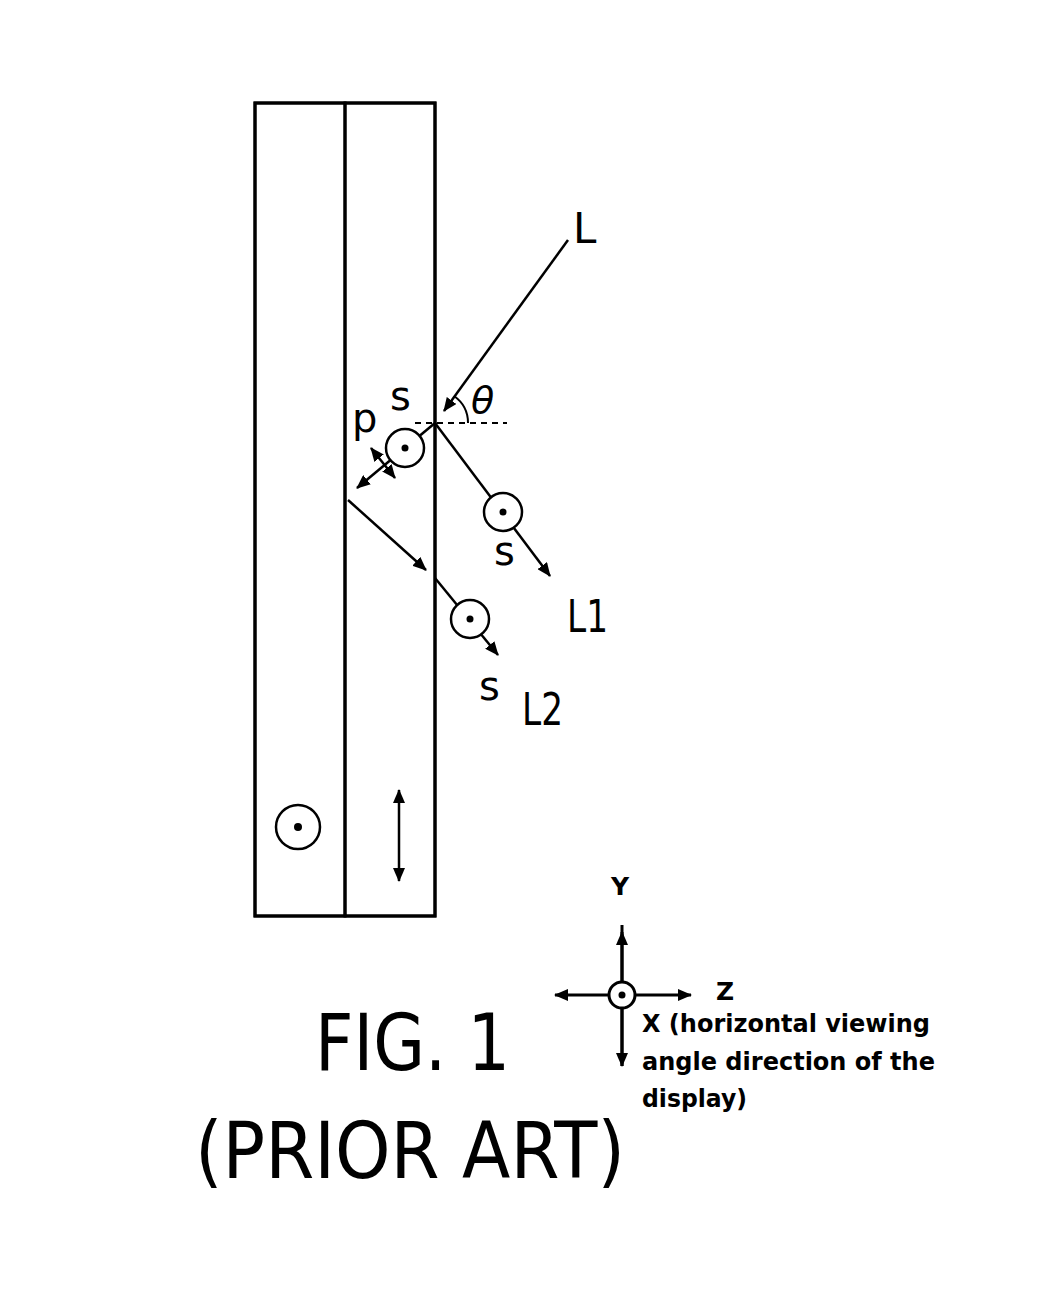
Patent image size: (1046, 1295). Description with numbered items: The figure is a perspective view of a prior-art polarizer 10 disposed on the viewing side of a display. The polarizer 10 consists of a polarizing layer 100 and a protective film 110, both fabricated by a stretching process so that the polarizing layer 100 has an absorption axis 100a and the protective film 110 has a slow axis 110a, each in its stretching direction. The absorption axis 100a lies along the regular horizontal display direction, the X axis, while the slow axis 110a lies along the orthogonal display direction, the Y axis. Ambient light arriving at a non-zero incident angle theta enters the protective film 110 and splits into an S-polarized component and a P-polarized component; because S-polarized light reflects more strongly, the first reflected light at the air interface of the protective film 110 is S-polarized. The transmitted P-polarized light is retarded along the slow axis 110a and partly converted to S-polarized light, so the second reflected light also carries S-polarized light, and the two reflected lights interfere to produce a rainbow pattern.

The polarizer 10 is at (117, 64).
The polarizing layer 100 is at (278, 143).
The protective film 110 is at (387, 145).
The absorption axis 100a is at (260, 828).
The slow axis 110a is at (426, 831).